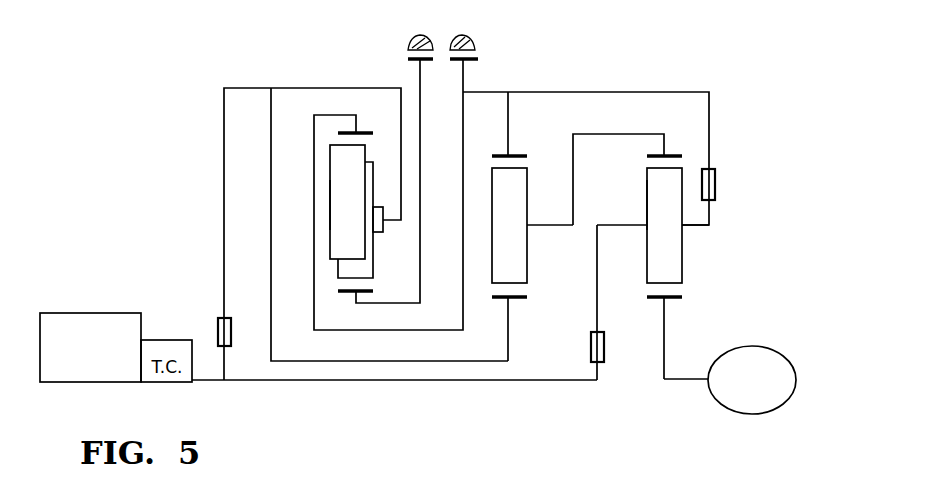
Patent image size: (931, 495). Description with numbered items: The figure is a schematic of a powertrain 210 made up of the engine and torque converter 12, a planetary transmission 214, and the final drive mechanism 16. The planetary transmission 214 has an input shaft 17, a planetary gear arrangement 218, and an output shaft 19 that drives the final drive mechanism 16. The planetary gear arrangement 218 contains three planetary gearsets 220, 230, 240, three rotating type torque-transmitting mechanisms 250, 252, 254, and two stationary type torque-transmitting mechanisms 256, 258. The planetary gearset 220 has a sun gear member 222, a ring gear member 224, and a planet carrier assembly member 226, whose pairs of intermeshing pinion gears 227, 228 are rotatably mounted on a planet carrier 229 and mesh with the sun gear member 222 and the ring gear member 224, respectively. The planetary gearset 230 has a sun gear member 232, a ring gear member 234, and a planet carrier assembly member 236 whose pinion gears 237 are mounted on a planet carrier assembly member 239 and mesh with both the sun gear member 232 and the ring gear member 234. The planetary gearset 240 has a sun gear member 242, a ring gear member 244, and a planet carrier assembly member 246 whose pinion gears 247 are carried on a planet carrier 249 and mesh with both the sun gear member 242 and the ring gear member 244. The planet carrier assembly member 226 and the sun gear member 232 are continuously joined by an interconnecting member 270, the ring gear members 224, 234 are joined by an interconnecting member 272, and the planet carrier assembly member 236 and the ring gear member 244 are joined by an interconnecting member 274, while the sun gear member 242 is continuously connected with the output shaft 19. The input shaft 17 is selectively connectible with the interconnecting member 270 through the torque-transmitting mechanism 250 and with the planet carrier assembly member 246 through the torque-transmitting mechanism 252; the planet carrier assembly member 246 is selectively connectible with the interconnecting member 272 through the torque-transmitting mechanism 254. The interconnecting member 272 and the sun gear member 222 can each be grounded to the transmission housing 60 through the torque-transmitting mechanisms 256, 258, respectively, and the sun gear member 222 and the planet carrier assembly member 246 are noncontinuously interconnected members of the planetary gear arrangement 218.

The engine and torque converter 12 is at (94, 305).
The final drive mechanism 16 is at (781, 342).
The input shaft 17 is at (211, 381).
The output shaft 19 is at (686, 380).
The transmission housing 60 is at (458, 37).
The powertrain 210 is at (155, 174).
The planetary transmission 214 is at (592, 46).
The planetary gear arrangement 218 is at (455, 357).
The planetary gearset 220 is at (327, 283).
The sun gear member 222 is at (367, 303).
The ring gear member 224 is at (366, 132).
The planet carrier assembly member 226 is at (321, 139).
The pinion gears 227 is at (370, 173).
The pinion gears 228 is at (335, 228).
The planet carrier 229 is at (385, 227).
The planetary gearset 230 is at (513, 322).
The sun gear member 232 is at (520, 299).
The ring gear member 234 is at (500, 152).
The planet carrier assembly member 236 is at (537, 164).
The pinion gears 237 is at (523, 217).
The planet carrier assembly member 239 is at (548, 228).
The planetary gearset 240 is at (640, 297).
The sun gear member 242 is at (672, 300).
The ring gear member 244 is at (671, 152).
The planet carrier assembly member 246 is at (644, 160).
The pinion gears 247 is at (650, 193).
The planet carrier 249 is at (693, 227).
The torque-transmitting mechanism 250 is at (240, 325).
The torque-transmitting mechanism 252 is at (585, 362).
The torque-transmitting mechanism 254 is at (729, 183).
The torque-transmitting mechanism 256 is at (489, 60).
The torque-transmitting mechanism 258 is at (398, 60).
The interconnecting member 270 is at (493, 362).
The interconnecting member 272 is at (440, 329).
The interconnecting member 274 is at (601, 132).